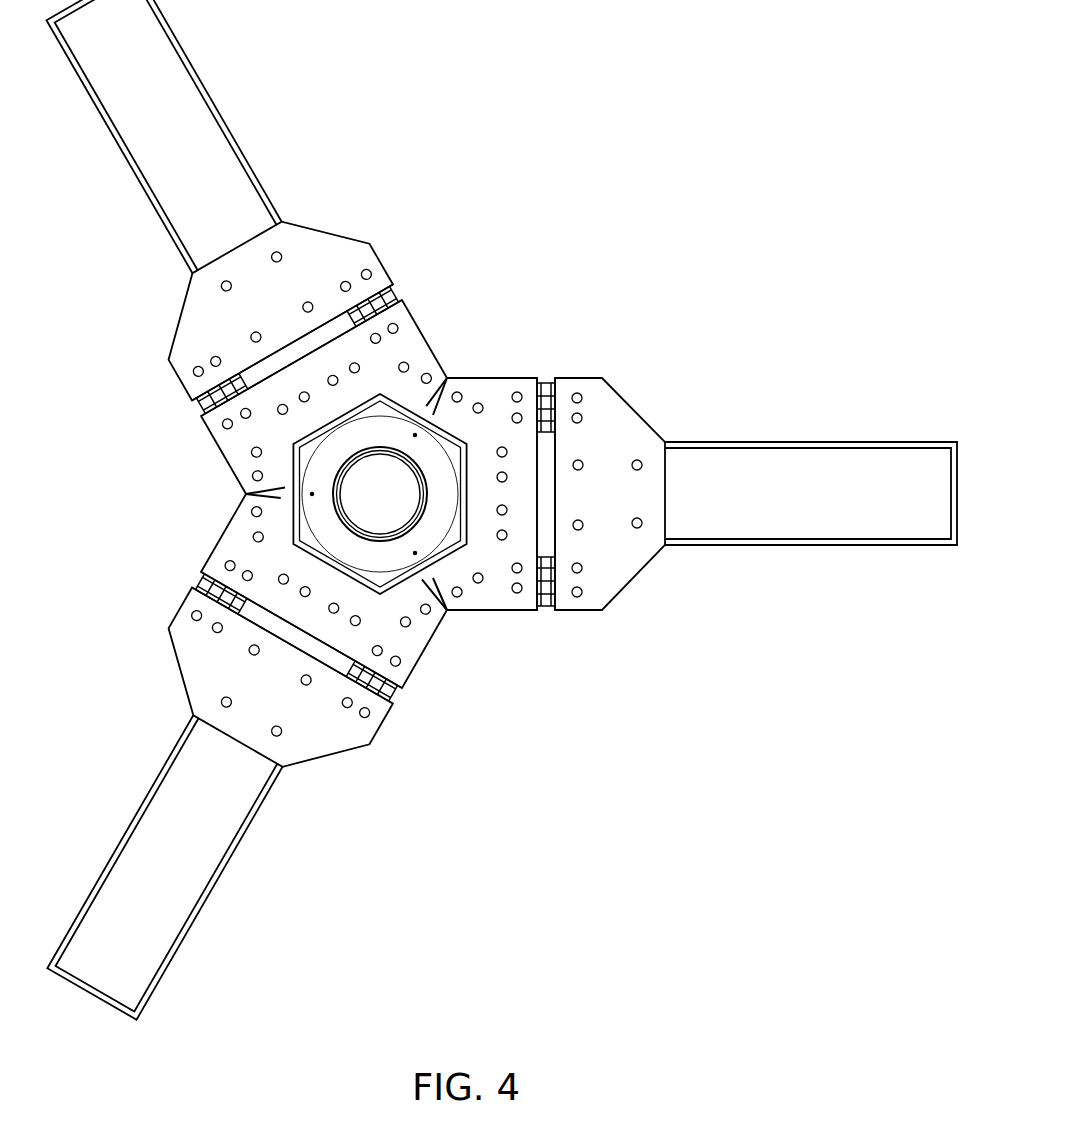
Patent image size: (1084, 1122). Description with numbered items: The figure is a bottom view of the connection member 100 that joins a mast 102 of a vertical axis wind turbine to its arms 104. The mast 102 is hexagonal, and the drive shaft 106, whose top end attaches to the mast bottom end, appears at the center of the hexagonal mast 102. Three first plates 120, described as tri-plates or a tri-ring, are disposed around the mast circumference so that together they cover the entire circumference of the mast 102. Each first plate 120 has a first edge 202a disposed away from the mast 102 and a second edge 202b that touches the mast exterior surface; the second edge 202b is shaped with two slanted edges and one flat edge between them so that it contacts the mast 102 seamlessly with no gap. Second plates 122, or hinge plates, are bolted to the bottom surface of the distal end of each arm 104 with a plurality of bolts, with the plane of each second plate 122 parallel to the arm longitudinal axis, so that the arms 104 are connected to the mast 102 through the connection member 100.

The connection member 100 is at (462, 312).
The mast 102 is at (293, 445).
The arm 104 is at (190, 113).
The drive shaft 106 is at (387, 510).
The first plate 120 is at (495, 590).
The second plate 122 is at (622, 560).
The first edge 202a is at (540, 480).
The second edge 202b is at (472, 483).